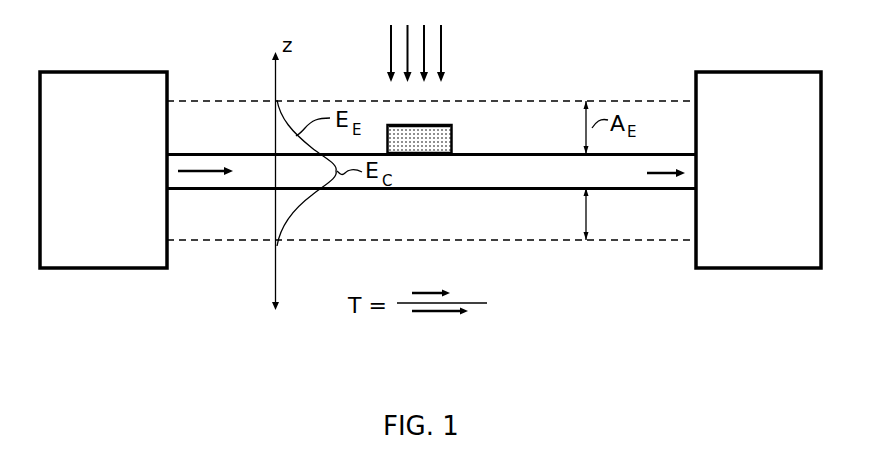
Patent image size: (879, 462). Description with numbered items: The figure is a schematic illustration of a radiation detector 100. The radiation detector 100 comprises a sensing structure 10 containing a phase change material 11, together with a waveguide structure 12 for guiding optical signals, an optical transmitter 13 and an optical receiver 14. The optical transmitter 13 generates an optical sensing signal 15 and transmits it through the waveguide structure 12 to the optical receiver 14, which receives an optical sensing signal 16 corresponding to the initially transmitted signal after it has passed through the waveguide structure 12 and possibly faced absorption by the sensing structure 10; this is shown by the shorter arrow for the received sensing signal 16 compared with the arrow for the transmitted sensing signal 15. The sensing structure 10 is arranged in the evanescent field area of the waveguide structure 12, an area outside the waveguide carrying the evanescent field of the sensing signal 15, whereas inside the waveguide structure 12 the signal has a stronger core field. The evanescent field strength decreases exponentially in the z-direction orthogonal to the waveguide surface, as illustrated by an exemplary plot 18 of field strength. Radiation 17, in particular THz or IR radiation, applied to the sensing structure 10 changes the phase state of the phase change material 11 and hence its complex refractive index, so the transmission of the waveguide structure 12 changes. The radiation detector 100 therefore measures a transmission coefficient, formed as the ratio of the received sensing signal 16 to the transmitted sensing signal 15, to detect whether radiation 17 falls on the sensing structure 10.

The sensing structure 10 is at (452, 131).
The phase change material 11 is at (399, 130).
The waveguide structure 12 is at (448, 189).
The optical transmitter 13 is at (100, 90).
The optical receiver 14 is at (756, 95).
The optical sensing signal 15 is at (196, 166).
The received optical sensing signal 16 is at (662, 166).
The radiation 17 is at (443, 47).
The plot of the field strength 18 is at (286, 212).
The radiation detector 100 is at (795, 442).